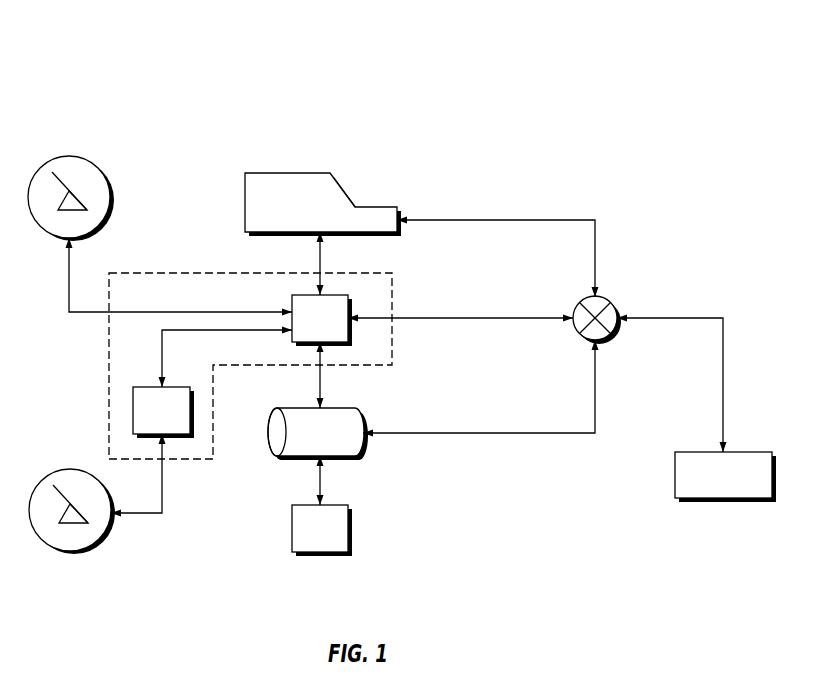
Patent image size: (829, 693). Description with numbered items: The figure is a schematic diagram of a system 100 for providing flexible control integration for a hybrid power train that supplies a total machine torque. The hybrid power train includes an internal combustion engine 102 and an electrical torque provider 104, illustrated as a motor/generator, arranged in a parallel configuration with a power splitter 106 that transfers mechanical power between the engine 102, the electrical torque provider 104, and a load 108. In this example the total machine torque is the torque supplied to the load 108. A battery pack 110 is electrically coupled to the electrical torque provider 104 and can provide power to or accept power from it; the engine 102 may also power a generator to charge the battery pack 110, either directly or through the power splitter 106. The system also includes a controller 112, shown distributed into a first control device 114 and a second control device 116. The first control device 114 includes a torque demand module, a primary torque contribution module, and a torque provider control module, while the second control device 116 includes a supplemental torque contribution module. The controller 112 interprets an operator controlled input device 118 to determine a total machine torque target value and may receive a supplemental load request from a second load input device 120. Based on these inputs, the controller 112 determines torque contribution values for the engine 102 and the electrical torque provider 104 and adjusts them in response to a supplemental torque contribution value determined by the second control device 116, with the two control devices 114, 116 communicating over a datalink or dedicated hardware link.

The system 100 is at (121, 48).
The internal combustion engine 102 is at (308, 217).
The electrical torque provider 104 is at (338, 442).
The power splitter 106 is at (616, 336).
The load 108 is at (675, 477).
The battery pack 110 is at (338, 539).
The controller 112 is at (108, 367).
The first control device 114 is at (338, 330).
The second control device 116 is at (180, 422).
The operator controlled input device 118 is at (70, 156).
The second load input device 120 is at (68, 469).